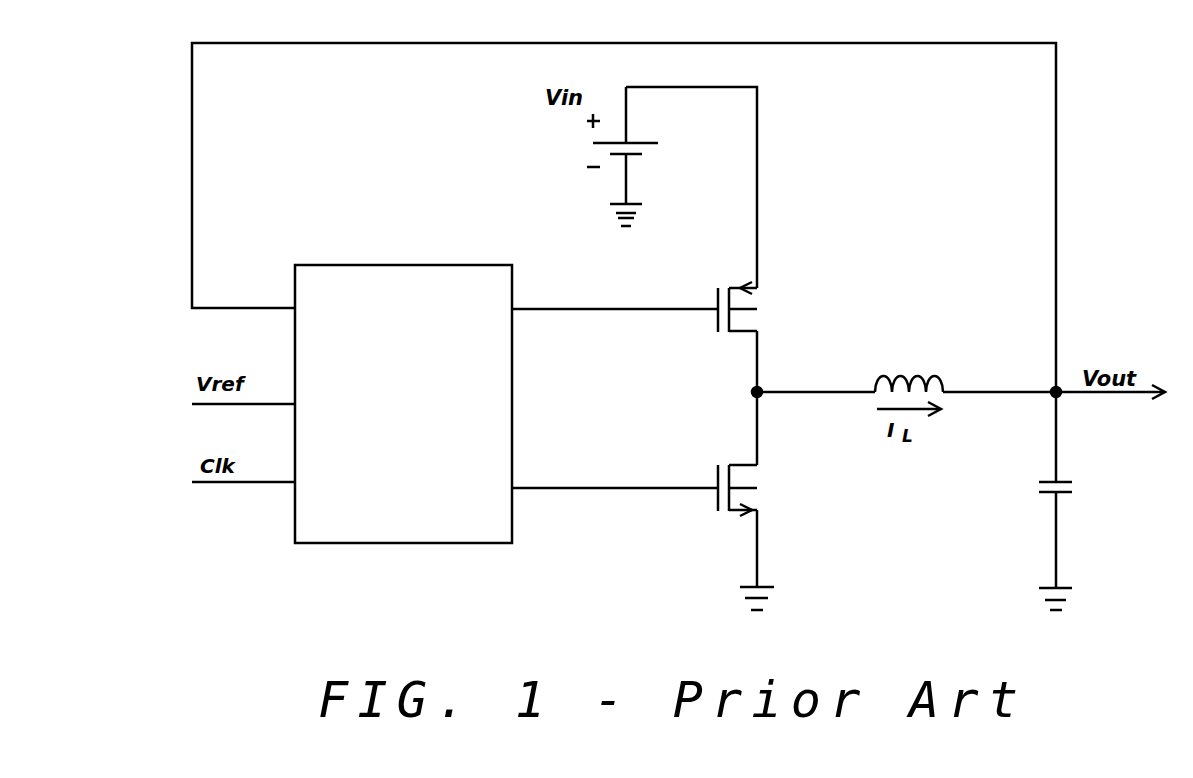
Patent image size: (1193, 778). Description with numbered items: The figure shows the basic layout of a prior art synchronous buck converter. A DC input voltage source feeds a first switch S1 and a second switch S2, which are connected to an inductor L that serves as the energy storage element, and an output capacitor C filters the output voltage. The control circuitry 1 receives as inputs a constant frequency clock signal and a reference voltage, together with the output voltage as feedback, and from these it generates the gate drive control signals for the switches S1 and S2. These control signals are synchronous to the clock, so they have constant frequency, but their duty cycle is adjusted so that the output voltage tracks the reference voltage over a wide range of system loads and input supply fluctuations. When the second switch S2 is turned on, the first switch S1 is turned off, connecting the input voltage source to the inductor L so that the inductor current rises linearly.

The control circuitry 1 is at (431, 265).
The first switch S1 is at (737, 478).
The second switch S2 is at (737, 292).
The inductor L is at (909, 373).
The output capacitor C is at (1067, 490).